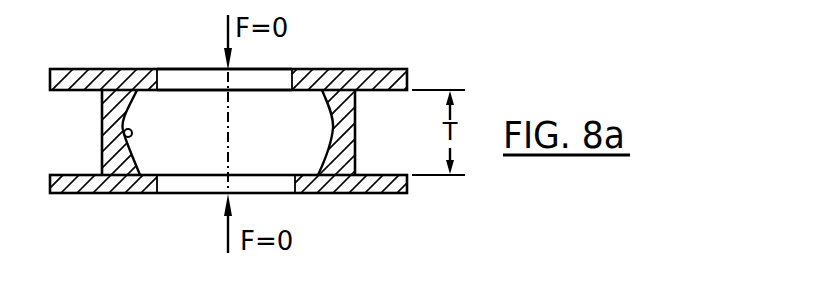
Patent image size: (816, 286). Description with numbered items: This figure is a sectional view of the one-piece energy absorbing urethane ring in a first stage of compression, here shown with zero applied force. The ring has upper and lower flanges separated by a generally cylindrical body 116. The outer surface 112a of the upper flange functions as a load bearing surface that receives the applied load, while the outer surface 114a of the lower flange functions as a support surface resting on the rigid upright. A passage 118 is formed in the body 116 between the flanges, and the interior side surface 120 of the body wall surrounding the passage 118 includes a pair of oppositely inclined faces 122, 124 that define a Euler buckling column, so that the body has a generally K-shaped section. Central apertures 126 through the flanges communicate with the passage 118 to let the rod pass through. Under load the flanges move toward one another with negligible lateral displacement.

The outer surface of upper flange 112a is at (350, 71).
The outer surface of lower flange 114a is at (137, 194).
The cylindrical body 116 is at (101, 108).
The passage 118 is at (234, 162).
The interior side surface 120 is at (118, 143).
The inclined face 122 is at (135, 100).
The inclined face 124 is at (140, 160).
The central aperture 126 is at (192, 80).